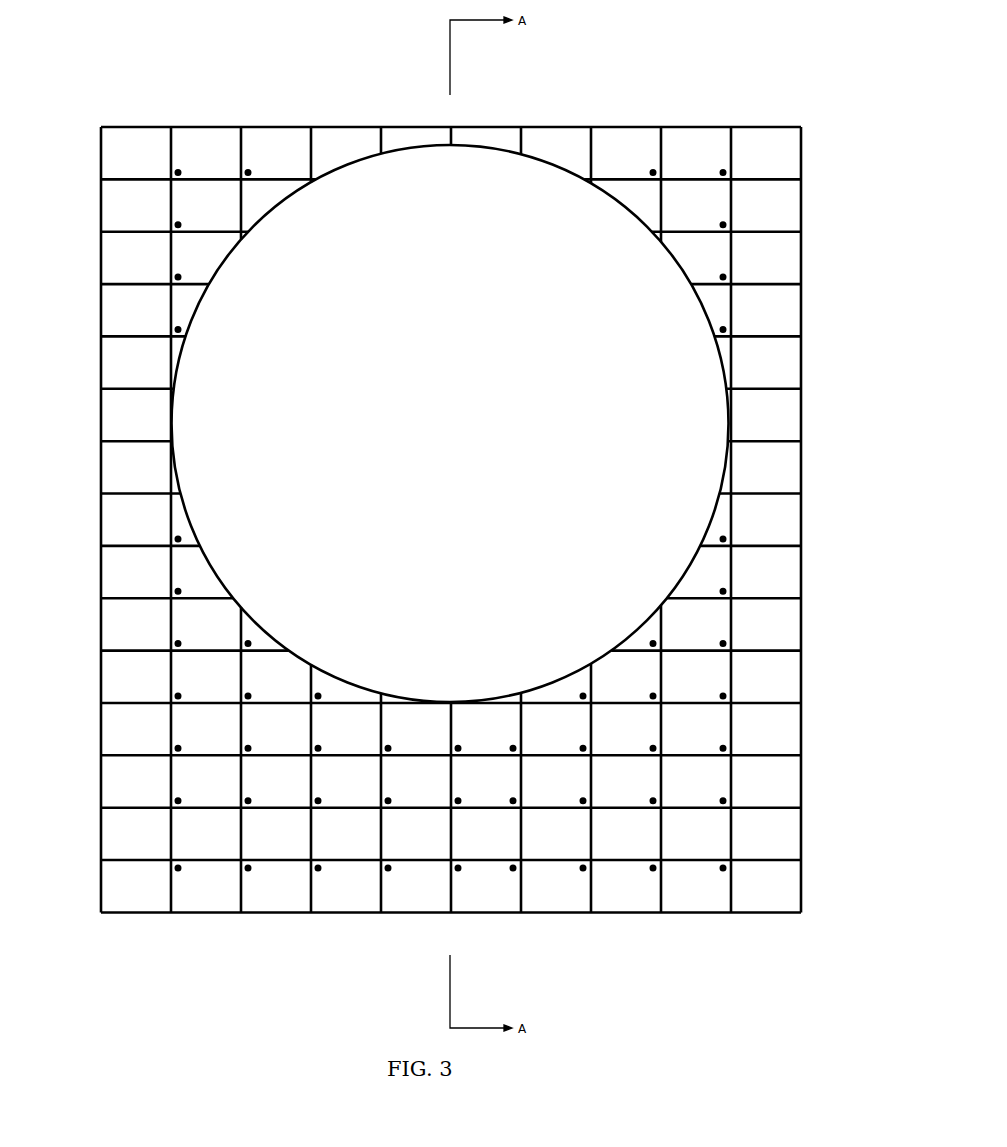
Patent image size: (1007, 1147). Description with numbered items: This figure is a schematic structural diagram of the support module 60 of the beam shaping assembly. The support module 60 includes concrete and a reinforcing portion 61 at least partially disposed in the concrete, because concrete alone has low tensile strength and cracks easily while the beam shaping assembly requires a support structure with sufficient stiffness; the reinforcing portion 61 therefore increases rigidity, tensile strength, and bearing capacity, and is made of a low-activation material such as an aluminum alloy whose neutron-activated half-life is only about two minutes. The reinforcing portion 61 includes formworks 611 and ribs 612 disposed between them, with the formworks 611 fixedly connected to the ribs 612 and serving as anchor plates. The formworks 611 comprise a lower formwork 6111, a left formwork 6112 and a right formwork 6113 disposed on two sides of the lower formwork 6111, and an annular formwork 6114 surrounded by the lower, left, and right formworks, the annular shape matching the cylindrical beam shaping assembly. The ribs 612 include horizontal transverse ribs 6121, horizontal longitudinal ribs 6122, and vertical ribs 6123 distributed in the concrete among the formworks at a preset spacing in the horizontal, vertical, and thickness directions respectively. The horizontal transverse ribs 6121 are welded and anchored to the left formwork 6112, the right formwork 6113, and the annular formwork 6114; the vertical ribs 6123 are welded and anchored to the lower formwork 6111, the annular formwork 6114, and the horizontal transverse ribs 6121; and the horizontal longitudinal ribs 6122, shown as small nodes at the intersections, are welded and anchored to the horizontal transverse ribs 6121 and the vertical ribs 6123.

The support module 60 is at (448, 494).
The reinforcing portion 61 is at (448, 537).
The formworks 611 is at (454, 537).
The lower formwork 6111 is at (678, 913).
The left formwork 6112 is at (100, 512).
The right formwork 6113 is at (803, 411).
The annular formwork 6114 is at (698, 302).
The ribs 612 is at (416, 531).
The horizontal transverse ribs 6121 is at (126, 806).
The horizontal longitudinal ribs 6122 is at (181, 871).
The vertical ribs 6123 is at (168, 837).